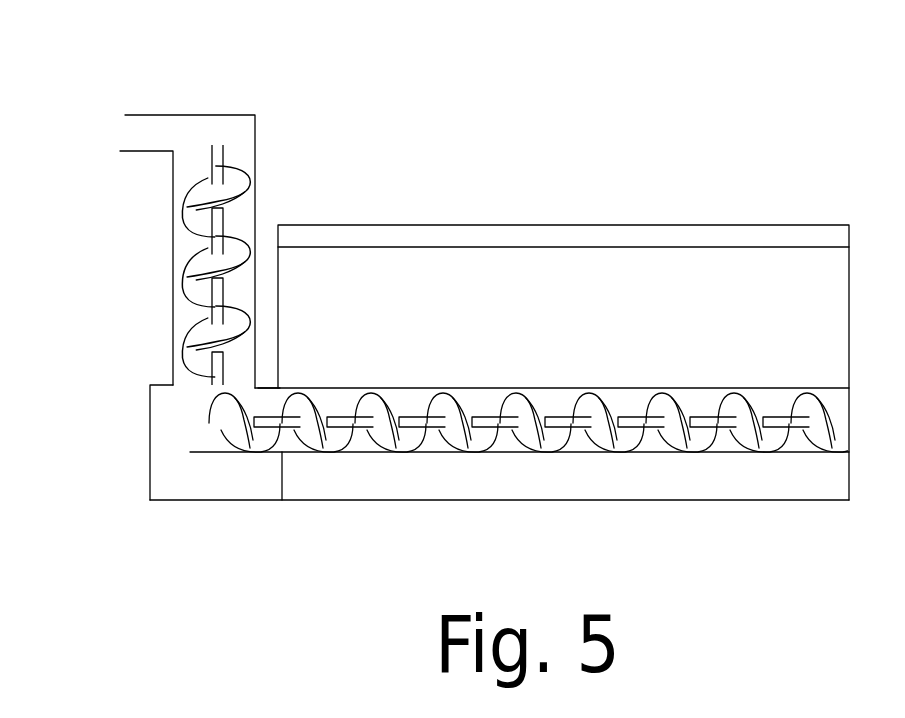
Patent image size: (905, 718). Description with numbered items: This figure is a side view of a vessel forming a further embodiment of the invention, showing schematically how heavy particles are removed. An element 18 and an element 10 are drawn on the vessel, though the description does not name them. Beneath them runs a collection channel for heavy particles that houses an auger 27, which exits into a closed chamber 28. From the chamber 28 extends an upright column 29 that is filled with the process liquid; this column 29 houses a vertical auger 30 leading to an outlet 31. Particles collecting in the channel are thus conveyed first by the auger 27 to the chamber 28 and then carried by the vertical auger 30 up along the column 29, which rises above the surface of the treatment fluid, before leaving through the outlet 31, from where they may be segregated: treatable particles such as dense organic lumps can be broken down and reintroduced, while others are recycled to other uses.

The chamber interior / material 10 is at (640, 300).
The container 18 is at (548, 235).
The auger 27 is at (725, 427).
The closed chamber 28 is at (242, 475).
The upright column 29 is at (173, 210).
The vertical auger 30 is at (182, 318).
The outlet 31 is at (122, 132).